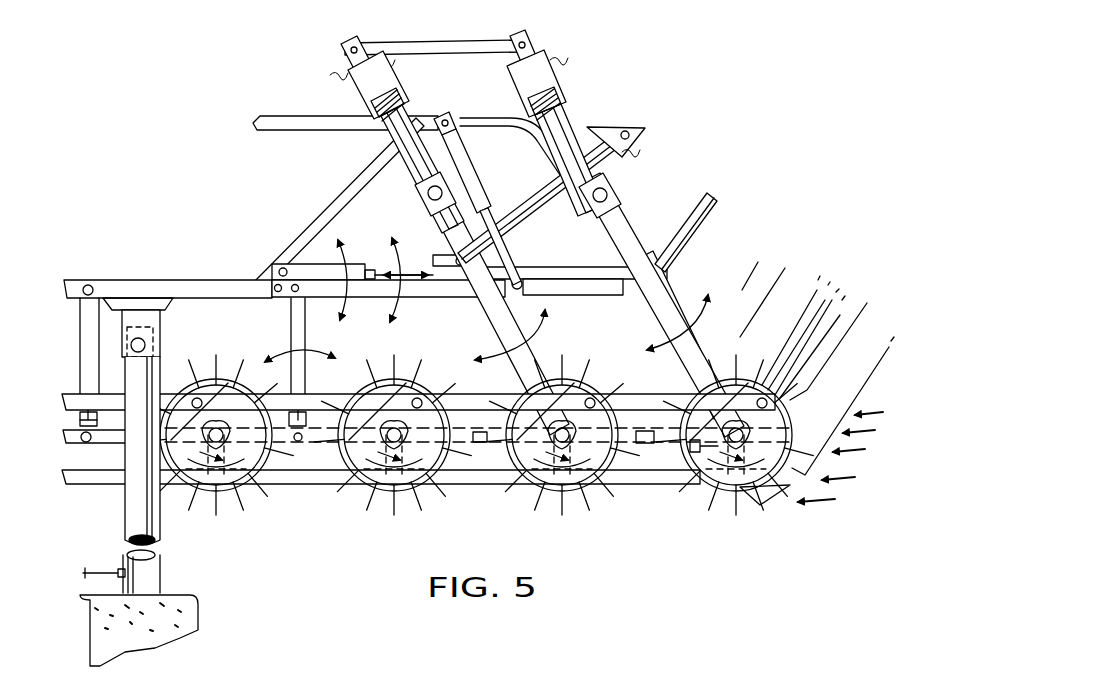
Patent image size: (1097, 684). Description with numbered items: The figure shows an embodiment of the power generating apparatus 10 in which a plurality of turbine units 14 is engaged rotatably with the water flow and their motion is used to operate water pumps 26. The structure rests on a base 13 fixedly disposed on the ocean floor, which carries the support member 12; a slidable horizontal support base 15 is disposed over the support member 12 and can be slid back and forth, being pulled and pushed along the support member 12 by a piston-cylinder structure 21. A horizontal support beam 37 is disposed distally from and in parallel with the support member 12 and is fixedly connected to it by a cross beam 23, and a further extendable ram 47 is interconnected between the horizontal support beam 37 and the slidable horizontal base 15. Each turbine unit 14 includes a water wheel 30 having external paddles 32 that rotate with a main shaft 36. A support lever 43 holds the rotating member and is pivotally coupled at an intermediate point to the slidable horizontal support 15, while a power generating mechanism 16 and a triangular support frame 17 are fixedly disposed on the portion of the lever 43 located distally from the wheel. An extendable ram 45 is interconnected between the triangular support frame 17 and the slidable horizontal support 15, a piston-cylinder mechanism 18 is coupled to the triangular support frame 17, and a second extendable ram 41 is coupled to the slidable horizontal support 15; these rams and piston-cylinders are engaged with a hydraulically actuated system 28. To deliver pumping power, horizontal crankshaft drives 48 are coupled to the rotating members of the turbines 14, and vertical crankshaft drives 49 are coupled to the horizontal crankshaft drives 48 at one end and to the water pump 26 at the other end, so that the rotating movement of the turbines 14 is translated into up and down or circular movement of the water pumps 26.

The power generating apparatus 10 is at (690, 170).
The support member 12 is at (232, 278).
The base 13 is at (123, 507).
The turbine unit 14 is at (208, 507).
The slidable horizontal support base 15 is at (552, 268).
The power generating mechanism 16 is at (360, 168).
The triangular support frame 17 is at (610, 120).
The piston-cylinder mechanism 18 is at (311, 268).
The piston-cylinder structure 21 is at (350, 262).
The cross beam 23 is at (307, 225).
The water pump 26 is at (380, 137).
The hydraulically actuated system 28 is at (539, 185).
The water wheel 30 is at (250, 503).
The external paddles 32 is at (170, 498).
The main shaft 36 is at (677, 450).
The horizontal support beam 37 is at (316, 115).
The second extendable ram 41 is at (80, 358).
The support lever 43 is at (497, 327).
The extendable ram 45 is at (533, 203).
The further extendable ram 47 is at (520, 222).
The horizontal crankshaft drive 48 is at (481, 402).
The vertical crankshaft drive 49 is at (552, 312).